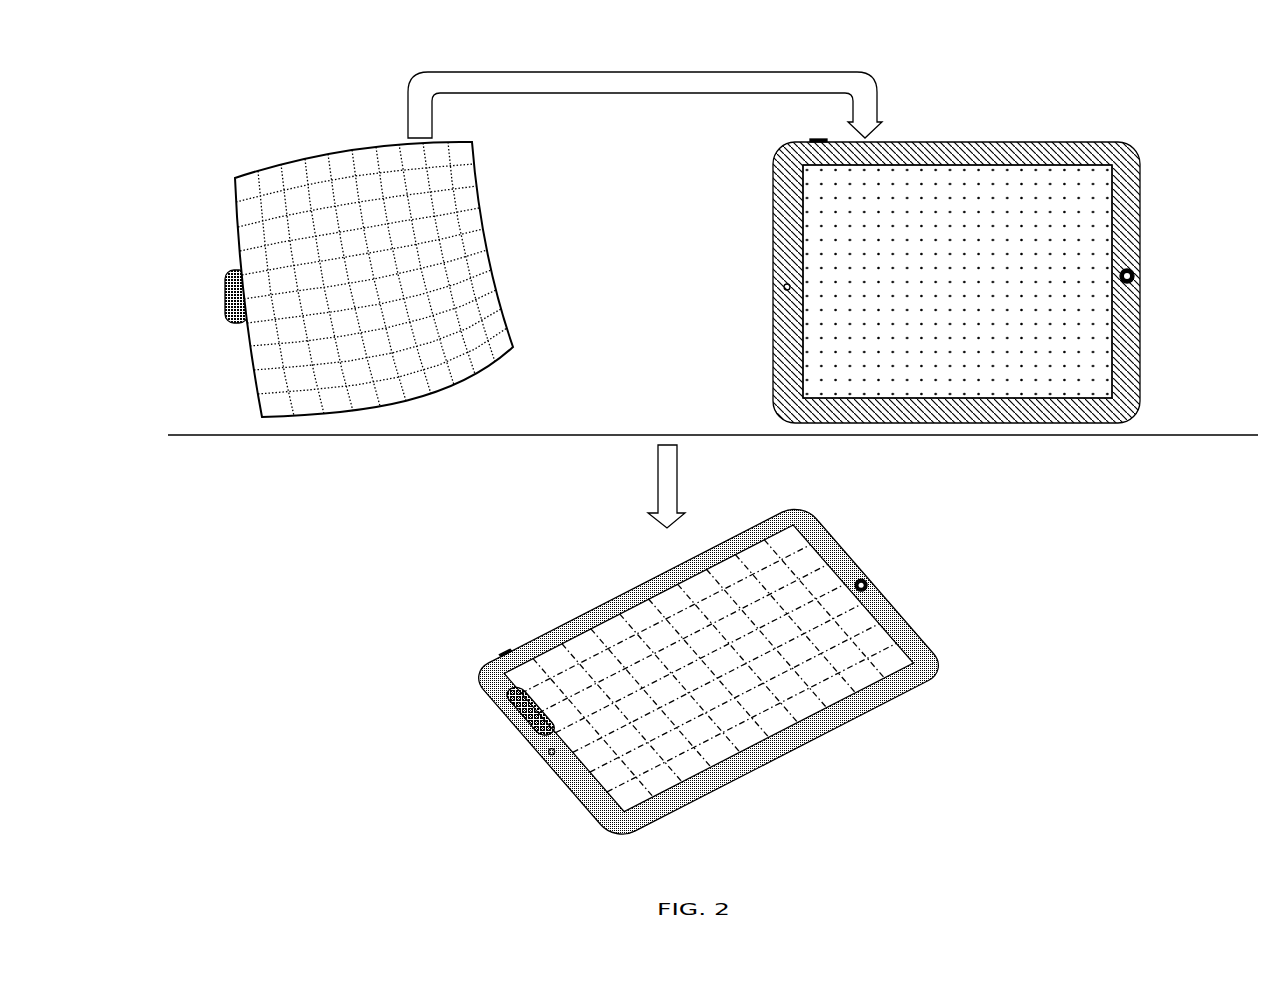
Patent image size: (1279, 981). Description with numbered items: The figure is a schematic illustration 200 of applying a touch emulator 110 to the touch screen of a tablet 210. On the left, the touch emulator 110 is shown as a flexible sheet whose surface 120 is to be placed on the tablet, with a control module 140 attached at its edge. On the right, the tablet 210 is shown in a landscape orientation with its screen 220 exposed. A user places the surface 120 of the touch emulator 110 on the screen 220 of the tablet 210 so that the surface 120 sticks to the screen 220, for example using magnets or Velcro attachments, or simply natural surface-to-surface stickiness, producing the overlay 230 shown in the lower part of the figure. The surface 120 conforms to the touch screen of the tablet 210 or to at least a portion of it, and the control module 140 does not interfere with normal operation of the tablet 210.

The touch emulator 110 is at (332, 260).
The surface 120 is at (380, 162).
The control module 140 is at (515, 718).
The schematic illustration 200 is at (1230, 124).
The tablet 210 is at (999, 253).
The screen 220 is at (1092, 243).
The overlay 230 is at (674, 665).